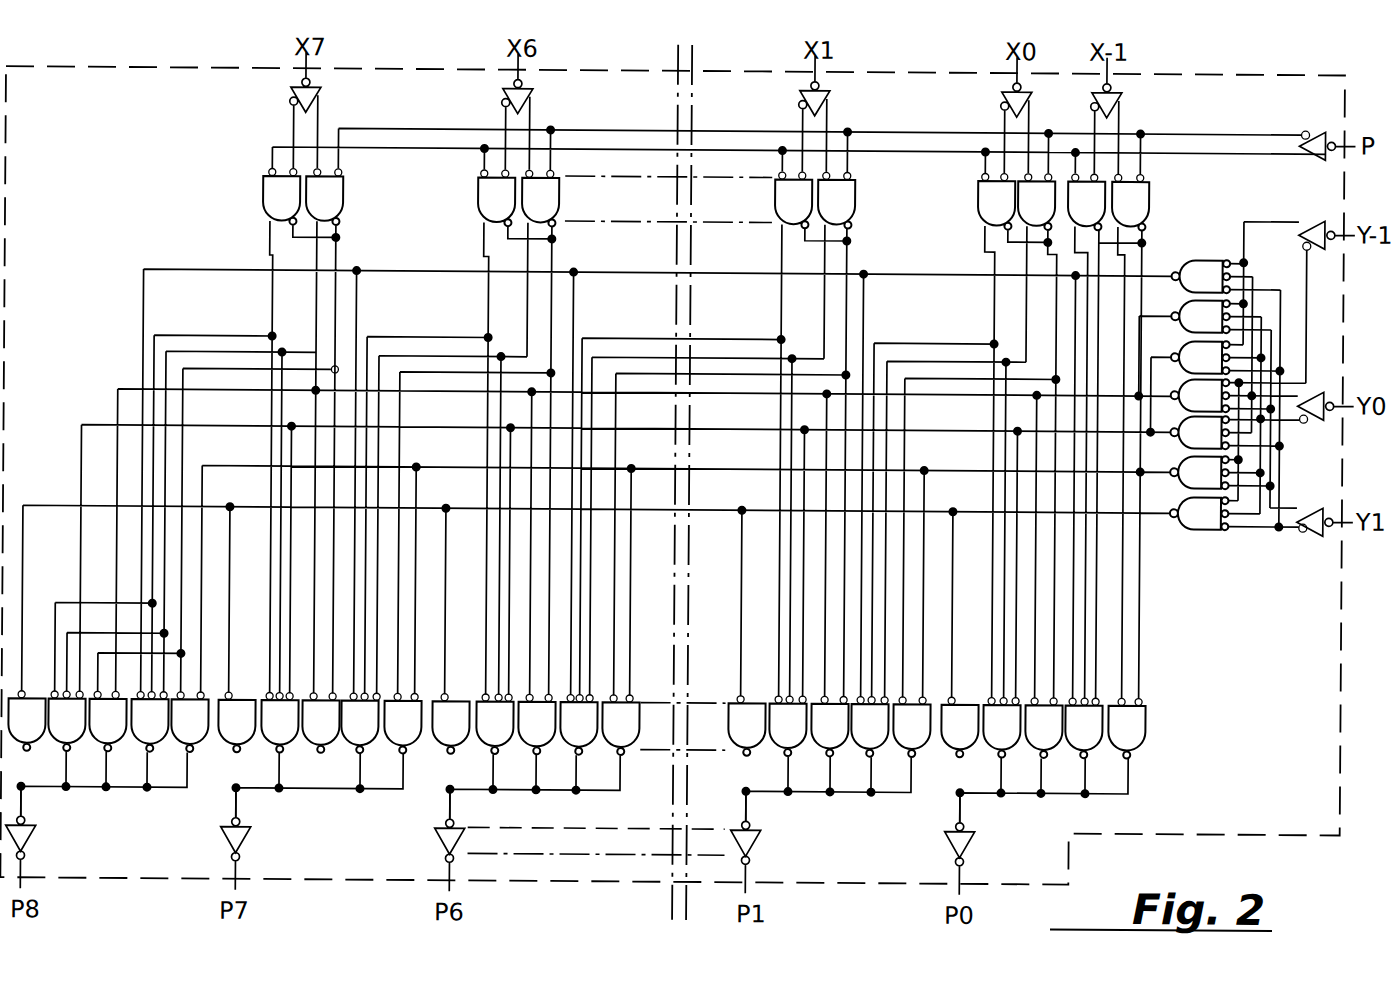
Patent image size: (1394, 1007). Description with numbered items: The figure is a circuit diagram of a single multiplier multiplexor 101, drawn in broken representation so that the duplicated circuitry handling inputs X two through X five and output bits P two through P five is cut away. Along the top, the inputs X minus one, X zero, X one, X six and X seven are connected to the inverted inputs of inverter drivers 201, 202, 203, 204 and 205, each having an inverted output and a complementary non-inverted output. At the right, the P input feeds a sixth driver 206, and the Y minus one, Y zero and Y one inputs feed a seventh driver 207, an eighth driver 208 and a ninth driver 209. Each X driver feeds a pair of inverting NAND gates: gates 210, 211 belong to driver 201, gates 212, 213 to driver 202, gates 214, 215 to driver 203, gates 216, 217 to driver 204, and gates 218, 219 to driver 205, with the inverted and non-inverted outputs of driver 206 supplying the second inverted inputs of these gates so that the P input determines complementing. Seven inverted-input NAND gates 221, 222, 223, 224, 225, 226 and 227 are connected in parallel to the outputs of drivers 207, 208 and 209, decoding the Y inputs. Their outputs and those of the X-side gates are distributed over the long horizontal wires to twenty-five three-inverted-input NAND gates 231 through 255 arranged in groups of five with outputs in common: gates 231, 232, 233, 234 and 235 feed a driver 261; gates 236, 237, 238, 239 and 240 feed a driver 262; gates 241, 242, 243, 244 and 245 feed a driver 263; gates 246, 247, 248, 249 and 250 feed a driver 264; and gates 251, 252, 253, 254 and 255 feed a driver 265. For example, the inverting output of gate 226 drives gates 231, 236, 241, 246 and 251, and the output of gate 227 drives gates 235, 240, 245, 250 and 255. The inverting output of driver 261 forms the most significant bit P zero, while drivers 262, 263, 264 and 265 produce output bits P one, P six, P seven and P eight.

The multiplier multiplexor 101 is at (1343, 668).
The driver 201 is at (1120, 93).
The second driver 202 is at (1030, 93).
The third driver 203 is at (829, 94).
The fourth driver 204 is at (531, 95).
The fifth driver 205 is at (321, 93).
The sixth driver 206 is at (1300, 128).
The seventh driver 207 is at (1300, 217).
The eighth driver 208 is at (1322, 389).
The ninth driver 209 is at (1322, 505).
The NAND gate 210 is at (1114, 213).
The NAND gate 211 is at (1070, 213).
The NAND gate 212 is at (1020, 213).
The NAND gate 213 is at (980, 213).
The NAND gate 214 is at (820, 213).
The NAND gate 215 is at (777, 213).
The NAND gate 216 is at (524, 213).
The NAND gate 217 is at (480, 213).
The NAND gate 218 is at (308, 213).
The NAND gate 219 is at (265, 213).
The inverted input NAND gate 221 is at (1184, 285).
The inverted input NAND gate 222 is at (1184, 325).
The inverted input NAND gate 223 is at (1184, 366).
The inverted input NAND gate 224 is at (1184, 404).
The inverted input NAND gate 225 is at (1184, 441).
The inverted input NAND gate 226 is at (1184, 481).
The inverted input NAND gate 227 is at (1184, 522).
The NAND gate 231 is at (1114, 737).
The NAND gate 232 is at (1071, 737).
The NAND gate 233 is at (1031, 737).
The NAND gate 234 is at (989, 737).
The NAND gate 235 is at (947, 737).
The NAND gate 236 is at (899, 737).
The NAND gate 237 is at (857, 737).
The NAND gate 238 is at (817, 737).
The NAND gate 239 is at (775, 737).
The NAND gate 240 is at (734, 737).
The NAND gate 241 is at (608, 737).
The NAND gate 242 is at (566, 737).
The NAND gate 243 is at (524, 737).
The NAND gate 244 is at (482, 737).
The NAND gate 245 is at (438, 737).
The NAND gate 246 is at (390, 737).
The NAND gate 247 is at (347, 737).
The NAND gate 248 is at (308, 737).
The NAND gate 249 is at (267, 737).
The NAND gate 250 is at (224, 737).
The NAND gate 251 is at (177, 737).
The NAND gate 252 is at (137, 737).
The NAND gate 253 is at (95, 737).
The NAND gate 254 is at (54, 737).
The NAND gate 255 is at (14, 737).
The driver 261 is at (971, 841).
The driver 262 is at (757, 841).
The driver 263 is at (438, 844).
The driver 264 is at (247, 845).
The driver 265 is at (32, 845).